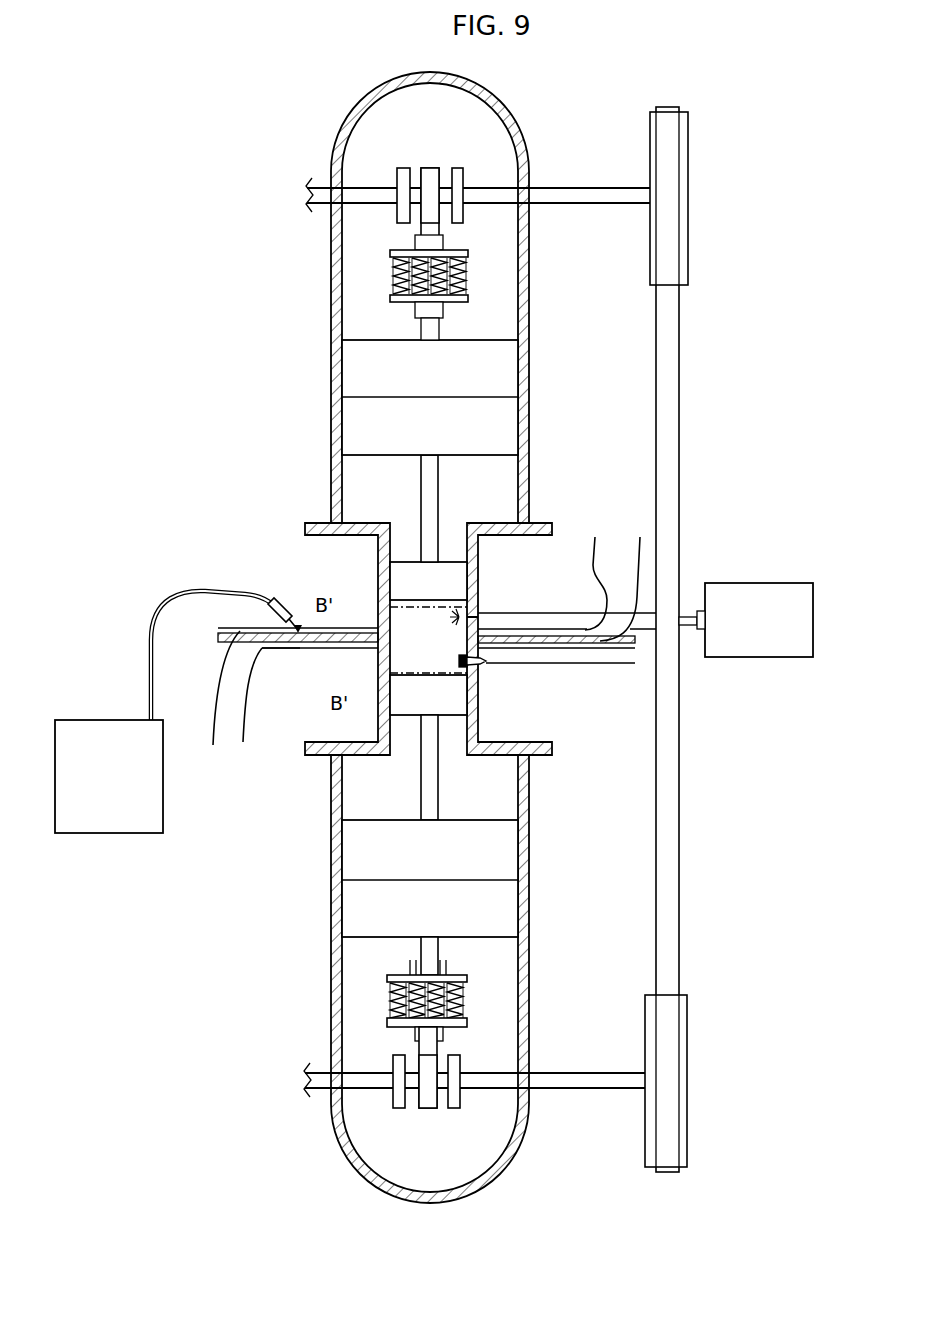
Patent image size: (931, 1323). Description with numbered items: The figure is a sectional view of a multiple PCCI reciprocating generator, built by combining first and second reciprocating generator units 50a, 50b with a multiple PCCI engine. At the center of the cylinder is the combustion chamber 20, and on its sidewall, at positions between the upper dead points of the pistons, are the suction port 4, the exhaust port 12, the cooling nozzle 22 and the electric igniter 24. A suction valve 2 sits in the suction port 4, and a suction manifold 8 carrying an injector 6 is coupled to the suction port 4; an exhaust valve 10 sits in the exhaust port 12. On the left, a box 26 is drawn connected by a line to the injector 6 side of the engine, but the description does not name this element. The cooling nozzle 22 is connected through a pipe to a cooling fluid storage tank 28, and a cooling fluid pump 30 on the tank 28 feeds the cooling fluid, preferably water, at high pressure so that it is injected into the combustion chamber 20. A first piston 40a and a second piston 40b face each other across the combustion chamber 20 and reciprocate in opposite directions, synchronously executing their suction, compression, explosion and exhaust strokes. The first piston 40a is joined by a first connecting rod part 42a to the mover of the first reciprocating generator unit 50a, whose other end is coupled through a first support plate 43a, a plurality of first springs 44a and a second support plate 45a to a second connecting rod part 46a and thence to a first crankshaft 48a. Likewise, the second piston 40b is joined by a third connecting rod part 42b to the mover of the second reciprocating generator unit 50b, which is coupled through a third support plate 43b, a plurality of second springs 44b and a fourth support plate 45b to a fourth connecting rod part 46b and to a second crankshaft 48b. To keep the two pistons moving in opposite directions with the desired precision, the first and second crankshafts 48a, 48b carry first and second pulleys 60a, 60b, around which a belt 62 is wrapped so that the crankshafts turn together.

The suction valve 2 is at (226, 630).
The suction port 4 is at (288, 650).
The injector 6 is at (276, 598).
The suction manifold 8 is at (218, 706).
The exhaust valve 10 is at (626, 643).
The exhaust port 12 is at (596, 580).
The combustion chamber 20 is at (437, 625).
The cooling nozzle 22 is at (478, 615).
The electric igniter 24 is at (472, 667).
The ignition control unit 26 is at (133, 823).
The cooling fluid storage tank 28 is at (790, 657).
The cooling fluid pump 30 is at (697, 630).
The first piston 40a is at (462, 700).
The second piston 40b is at (392, 578).
The first connecting rod part 42a is at (428, 787).
The third connecting rod part 42b is at (420, 497).
The first support plate 43a is at (468, 975).
The third support plate 43b is at (392, 300).
The first springs 44a is at (465, 998).
The second springs 44b is at (392, 276).
The second support plate 45a is at (468, 1022).
The fourth support plate 45b is at (393, 253).
The second connecting rod part 46a is at (425, 1090).
The fourth connecting rod part 46b is at (423, 228).
The first crankshaft 48a is at (485, 1080).
The second crankshaft 48b is at (360, 188).
The first reciprocating generator unit 50a is at (498, 852).
The second reciprocating generator unit 50b is at (362, 436).
The first pulley 60a is at (687, 1085).
The second pulley 60b is at (688, 190).
The belt 62 is at (672, 724).